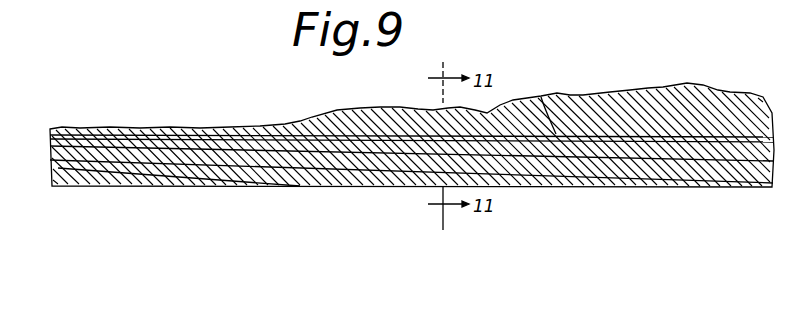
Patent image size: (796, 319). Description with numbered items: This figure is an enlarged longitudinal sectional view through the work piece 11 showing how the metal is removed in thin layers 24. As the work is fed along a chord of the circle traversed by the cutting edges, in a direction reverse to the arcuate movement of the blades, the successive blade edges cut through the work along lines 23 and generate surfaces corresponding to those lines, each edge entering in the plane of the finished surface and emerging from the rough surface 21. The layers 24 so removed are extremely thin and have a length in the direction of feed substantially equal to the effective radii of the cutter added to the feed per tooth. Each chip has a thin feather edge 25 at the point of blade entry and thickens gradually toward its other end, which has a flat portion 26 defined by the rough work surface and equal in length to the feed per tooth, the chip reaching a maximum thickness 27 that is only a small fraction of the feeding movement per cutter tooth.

The work piece 11 is at (338, 124).
The rough surface 21 is at (266, 188).
The lines 23 is at (188, 177).
The layers 24 is at (597, 135).
The thin feather edge 25 is at (541, 97).
The flat portion 26 is at (392, 188).
The maximum thickness 27 is at (663, 188).